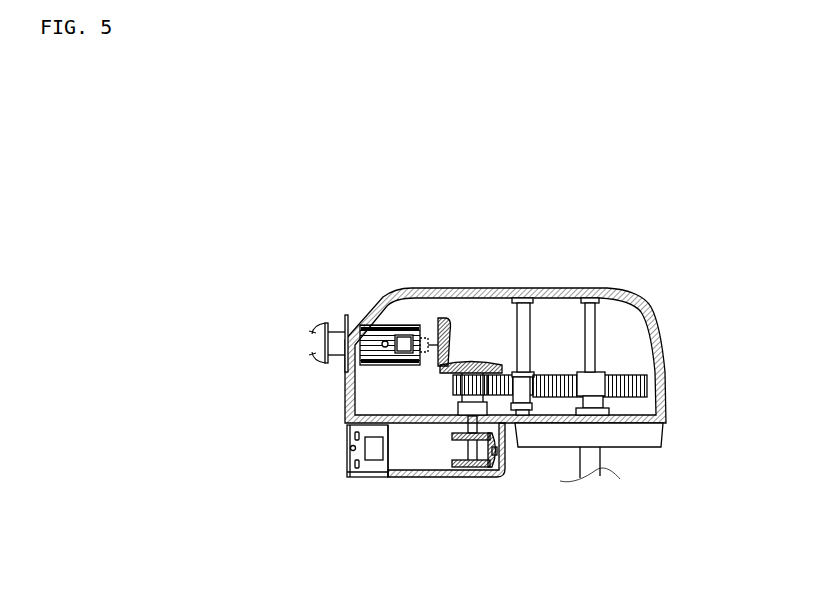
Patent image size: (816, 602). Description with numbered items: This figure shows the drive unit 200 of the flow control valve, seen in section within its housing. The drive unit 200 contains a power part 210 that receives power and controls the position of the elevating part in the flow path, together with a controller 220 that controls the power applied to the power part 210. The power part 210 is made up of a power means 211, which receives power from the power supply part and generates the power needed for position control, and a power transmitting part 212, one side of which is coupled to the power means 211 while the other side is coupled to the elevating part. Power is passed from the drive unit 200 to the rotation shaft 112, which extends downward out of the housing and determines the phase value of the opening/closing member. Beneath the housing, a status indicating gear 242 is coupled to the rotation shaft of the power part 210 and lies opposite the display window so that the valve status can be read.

The drive unit 200 is at (303, 250).
The power part 210 is at (657, 205).
The power means 211 is at (390, 326).
The power transmitting part 212 is at (545, 340).
The controller 220 is at (353, 448).
The status indicating gear 242 is at (478, 470).
The rotation shaft 112 is at (600, 475).